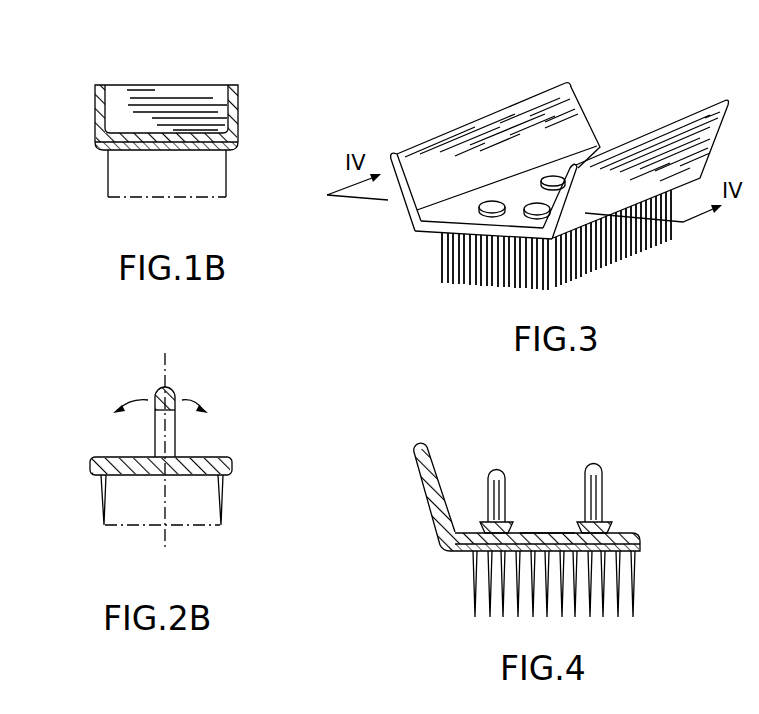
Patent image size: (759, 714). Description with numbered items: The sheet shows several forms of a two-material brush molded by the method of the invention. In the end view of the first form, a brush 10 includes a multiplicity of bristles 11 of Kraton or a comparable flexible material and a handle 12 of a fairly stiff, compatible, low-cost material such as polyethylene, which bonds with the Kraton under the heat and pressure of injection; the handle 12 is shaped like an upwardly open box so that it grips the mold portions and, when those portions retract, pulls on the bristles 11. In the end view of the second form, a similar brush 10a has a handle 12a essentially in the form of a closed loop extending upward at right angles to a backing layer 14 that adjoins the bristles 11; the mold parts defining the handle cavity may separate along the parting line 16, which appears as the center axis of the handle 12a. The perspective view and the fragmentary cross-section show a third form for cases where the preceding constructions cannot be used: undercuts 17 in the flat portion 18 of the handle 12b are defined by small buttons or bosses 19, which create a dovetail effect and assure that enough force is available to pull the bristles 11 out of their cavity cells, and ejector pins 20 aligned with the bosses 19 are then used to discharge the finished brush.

In FIG. 1B, the brush 10 is at (143, 135).
In FIG. 2B, the brush 10a is at (155, 444).
In FIG. 1B, the bristles 11 is at (112, 180).
In FIG. 3, the bristles 11 is at (443, 267).
In FIG. 4, the bristles 11 is at (480, 620).
In FIG. 1B, the handle 12 is at (108, 108).
In FIG. 2B, the handle 12a is at (175, 435).
In FIG. 3, the handle 12b is at (410, 208).
In FIG. 4, the handle 12b is at (430, 488).
In FIG. 2B, the backing layer 14 is at (193, 480).
In FIG. 4, the backing layer 14 is at (579, 509).
In FIG. 2B, the parting line 16 is at (167, 372).
In FIG. 4, the undercuts 17 is at (472, 530).
In FIG. 4, the flat portion 18 is at (555, 531).
In FIG. 3, the bosses 19 is at (531, 204).
In FIG. 4, the bosses 19 is at (510, 522).
In FIG. 4, the ejector pins 20 is at (500, 475).